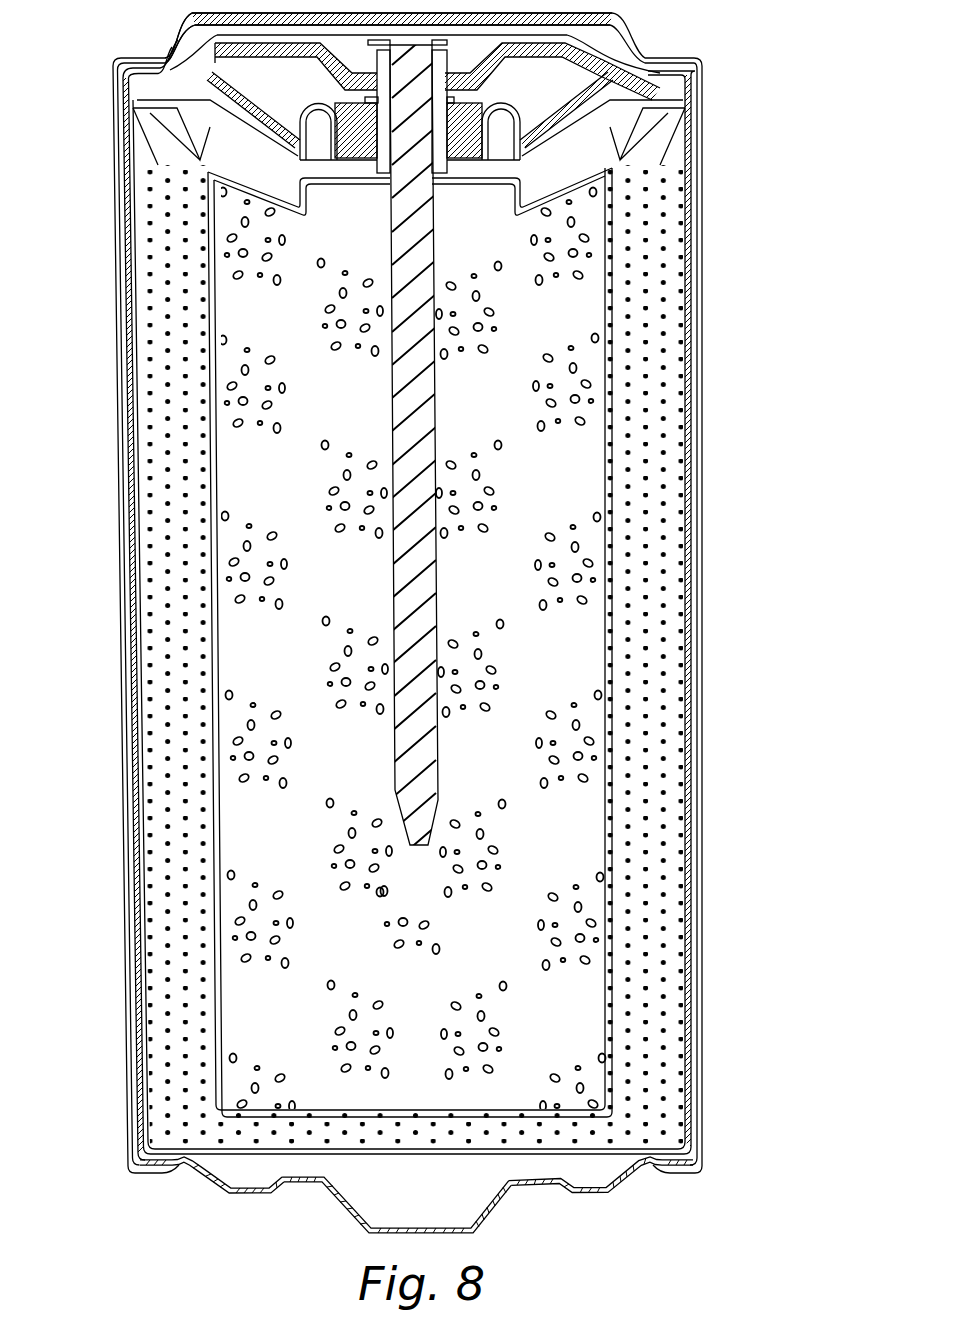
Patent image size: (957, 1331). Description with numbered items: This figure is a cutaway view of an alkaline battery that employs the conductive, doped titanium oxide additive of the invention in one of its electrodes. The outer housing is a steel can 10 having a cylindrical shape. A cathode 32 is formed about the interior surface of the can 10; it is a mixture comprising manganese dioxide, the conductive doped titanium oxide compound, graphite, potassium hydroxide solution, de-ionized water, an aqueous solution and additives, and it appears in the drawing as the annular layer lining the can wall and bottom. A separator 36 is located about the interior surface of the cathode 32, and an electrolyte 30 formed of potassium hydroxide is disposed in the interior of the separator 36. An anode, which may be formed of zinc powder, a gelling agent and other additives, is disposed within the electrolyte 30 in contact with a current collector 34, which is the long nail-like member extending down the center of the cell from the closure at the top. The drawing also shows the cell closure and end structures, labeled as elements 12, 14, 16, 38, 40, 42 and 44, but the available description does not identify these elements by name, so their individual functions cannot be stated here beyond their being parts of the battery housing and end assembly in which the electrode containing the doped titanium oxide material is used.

The steel can 10 is at (688, 308).
The can wall 12 is at (690, 262).
The cap assembly 14 is at (638, 40).
The bottom plate 16 is at (582, 1192).
The electrolyte 30 is at (255, 832).
The cathode 32 is at (662, 410).
The current collector 34 is at (405, 498).
The separator 36 is at (608, 588).
The gasket spring plate 38 is at (160, 163).
The crimp 40 is at (180, 58).
The bottom vent 42 is at (417, 1204).
The insulating jacket 44 is at (700, 522).